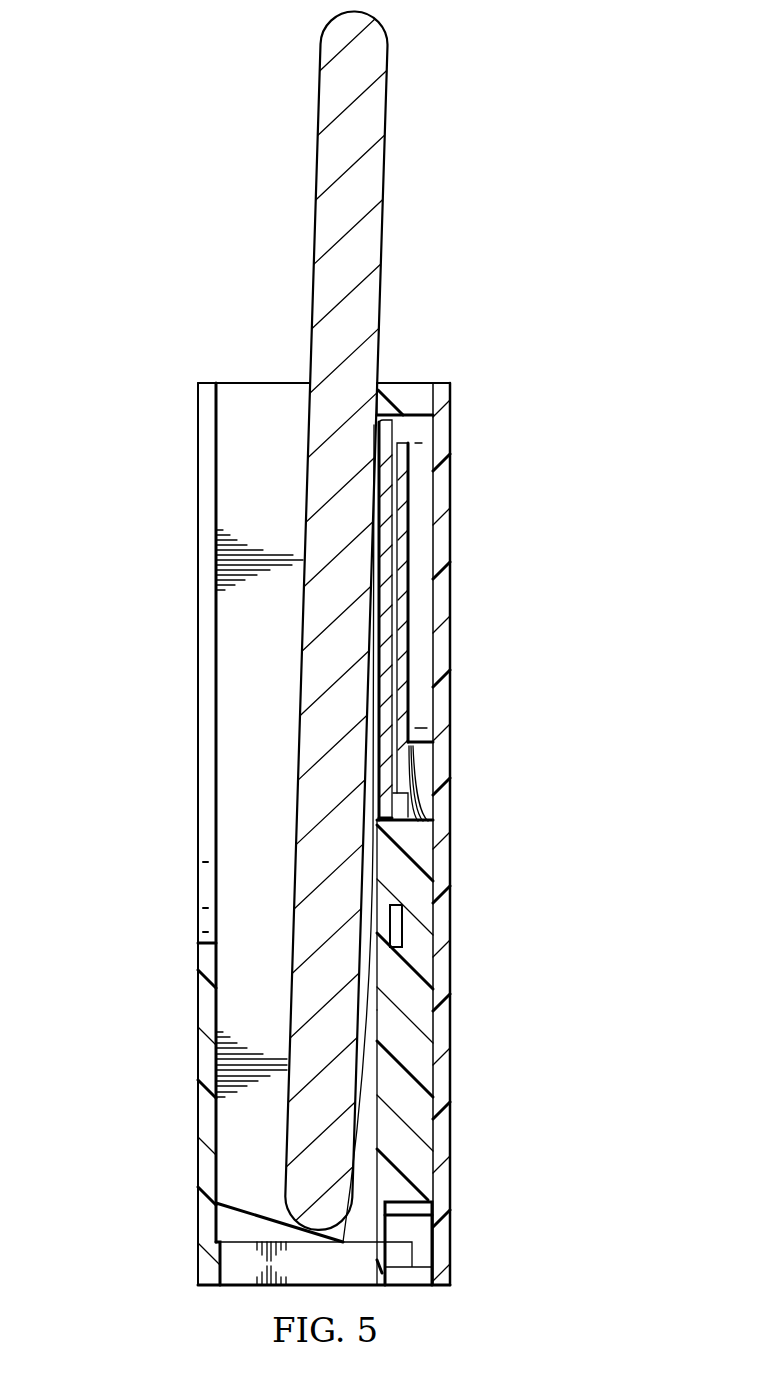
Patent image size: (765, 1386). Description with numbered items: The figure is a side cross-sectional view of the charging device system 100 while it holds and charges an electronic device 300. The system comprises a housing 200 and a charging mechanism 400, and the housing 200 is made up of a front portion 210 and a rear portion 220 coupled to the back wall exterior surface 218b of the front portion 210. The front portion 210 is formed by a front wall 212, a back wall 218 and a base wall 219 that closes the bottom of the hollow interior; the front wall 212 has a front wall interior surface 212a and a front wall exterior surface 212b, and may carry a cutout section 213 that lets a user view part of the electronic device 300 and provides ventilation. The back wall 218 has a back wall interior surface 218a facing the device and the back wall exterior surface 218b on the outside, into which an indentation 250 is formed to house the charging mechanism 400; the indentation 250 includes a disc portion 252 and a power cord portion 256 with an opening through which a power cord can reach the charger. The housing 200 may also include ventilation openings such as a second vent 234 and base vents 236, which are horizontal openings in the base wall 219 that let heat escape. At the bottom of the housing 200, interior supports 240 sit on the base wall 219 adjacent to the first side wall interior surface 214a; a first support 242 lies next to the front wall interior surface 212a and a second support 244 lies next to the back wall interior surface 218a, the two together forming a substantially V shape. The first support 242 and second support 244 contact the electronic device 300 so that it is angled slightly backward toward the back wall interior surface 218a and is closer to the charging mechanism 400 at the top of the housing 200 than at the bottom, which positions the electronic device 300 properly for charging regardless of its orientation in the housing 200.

The charging device system 100 is at (120, 126).
The housing 200 is at (204, 356).
The electronic device 300 is at (390, 107).
The charging mechanism 400 is at (408, 641).
The front portion 210 is at (199, 442).
The front wall 212 is at (199, 681).
The front wall interior surface 212a is at (215, 1133).
The front wall exterior surface 212b is at (197, 1070).
The cutout section 213 is at (205, 882).
The first side wall interior surface 214a is at (276, 392).
The back wall 218 is at (413, 386).
The back wall interior surface 218a is at (378, 1035).
The back wall exterior surface 218b is at (437, 862).
The base wall 219 is at (230, 1275).
The rear portion 220 is at (440, 600).
The second vent 234 is at (395, 922).
The base vents 236 is at (402, 1253).
The interior supports 240 is at (223, 1230).
The first support 242 is at (221, 1213).
The second support 244 is at (368, 1170).
The indentation 250 is at (418, 416).
The disc portion 252 is at (393, 433).
The power cord portion 256 is at (423, 1242).